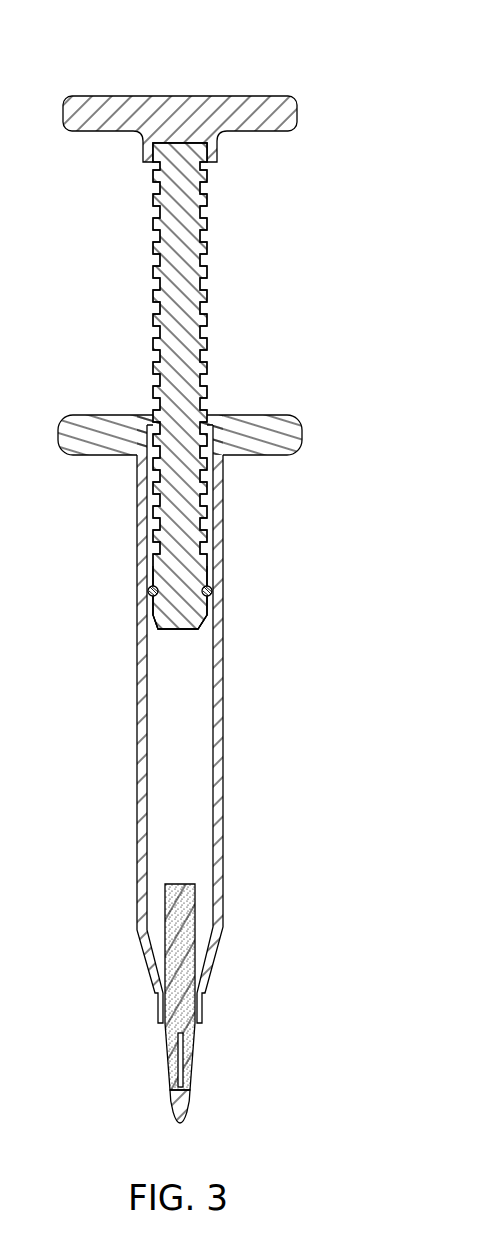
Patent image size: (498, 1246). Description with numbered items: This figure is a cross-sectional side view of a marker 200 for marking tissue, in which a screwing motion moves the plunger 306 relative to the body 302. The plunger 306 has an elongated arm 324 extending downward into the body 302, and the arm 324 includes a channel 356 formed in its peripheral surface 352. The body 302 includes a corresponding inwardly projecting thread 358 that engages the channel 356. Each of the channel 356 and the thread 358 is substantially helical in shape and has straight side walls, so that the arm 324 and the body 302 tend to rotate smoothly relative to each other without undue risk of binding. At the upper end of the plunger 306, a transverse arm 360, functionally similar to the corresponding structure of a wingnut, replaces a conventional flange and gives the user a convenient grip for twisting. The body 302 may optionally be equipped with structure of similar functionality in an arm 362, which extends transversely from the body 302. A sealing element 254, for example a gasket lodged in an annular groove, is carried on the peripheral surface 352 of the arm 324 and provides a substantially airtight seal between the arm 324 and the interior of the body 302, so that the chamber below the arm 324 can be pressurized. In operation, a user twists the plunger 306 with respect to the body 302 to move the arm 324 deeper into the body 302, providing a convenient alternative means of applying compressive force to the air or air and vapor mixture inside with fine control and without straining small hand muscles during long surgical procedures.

The injection device 200 is at (290, 52).
The transverse arm 360 is at (298, 107).
The plunger 306 is at (204, 386).
The channel 356 is at (162, 257).
The arm 324 is at (185, 386).
The thread 358 is at (152, 418).
The arm 362 is at (255, 416).
The peripheral surface 352 is at (185, 594).
The sealing element 254 is at (148, 591).
The body 302 is at (191, 738).